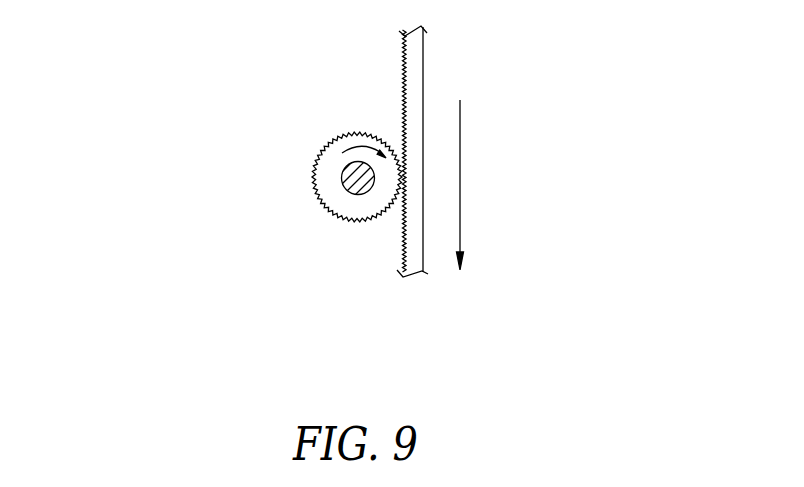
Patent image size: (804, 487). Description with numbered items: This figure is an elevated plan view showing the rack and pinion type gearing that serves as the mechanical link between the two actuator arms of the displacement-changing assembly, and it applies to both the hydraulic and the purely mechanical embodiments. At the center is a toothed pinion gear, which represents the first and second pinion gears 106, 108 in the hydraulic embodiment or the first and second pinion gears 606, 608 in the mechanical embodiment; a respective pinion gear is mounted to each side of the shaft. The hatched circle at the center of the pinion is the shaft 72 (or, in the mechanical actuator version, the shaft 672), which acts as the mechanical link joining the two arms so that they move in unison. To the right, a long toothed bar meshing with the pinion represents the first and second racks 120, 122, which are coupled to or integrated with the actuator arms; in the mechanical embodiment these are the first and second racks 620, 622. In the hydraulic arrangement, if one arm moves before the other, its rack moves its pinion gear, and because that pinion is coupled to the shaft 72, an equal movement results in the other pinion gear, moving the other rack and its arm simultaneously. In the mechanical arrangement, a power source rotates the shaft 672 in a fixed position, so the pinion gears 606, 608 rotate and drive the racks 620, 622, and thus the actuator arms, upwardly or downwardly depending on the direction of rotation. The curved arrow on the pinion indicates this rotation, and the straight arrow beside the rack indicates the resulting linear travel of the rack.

The first pinion gear 106 is at (352, 134).
The second pinion gear 108 is at (357, 177).
The first pinion gear 606 is at (357, 177).
The second pinion gear 608 is at (357, 177).
The shaft 72 is at (342, 176).
The shaft 672 is at (359, 179).
The first rack 120 is at (416, 67).
The second rack 122 is at (412, 151).
The first rack 620 is at (412, 151).
The second rack 622 is at (412, 151).